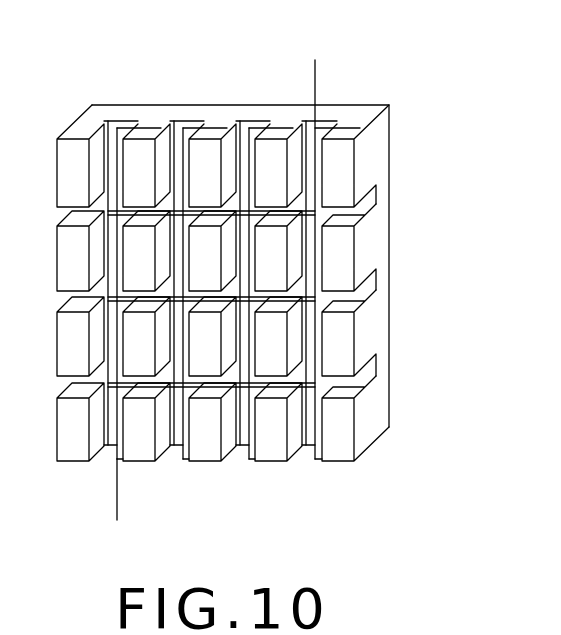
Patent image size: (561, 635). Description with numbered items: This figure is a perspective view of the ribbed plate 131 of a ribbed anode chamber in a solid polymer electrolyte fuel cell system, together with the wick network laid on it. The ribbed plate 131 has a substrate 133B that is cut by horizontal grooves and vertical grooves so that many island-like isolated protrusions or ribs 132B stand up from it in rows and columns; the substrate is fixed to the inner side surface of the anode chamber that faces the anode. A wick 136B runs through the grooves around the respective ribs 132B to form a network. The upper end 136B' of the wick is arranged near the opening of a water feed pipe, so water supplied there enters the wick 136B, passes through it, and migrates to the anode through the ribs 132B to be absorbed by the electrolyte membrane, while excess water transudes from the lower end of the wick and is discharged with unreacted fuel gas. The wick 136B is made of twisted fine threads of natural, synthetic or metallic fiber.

The ribbed plate 131 is at (278, 280).
The ribs 132B is at (276, 448).
The substrate 133B is at (378, 161).
The wick 136B is at (264, 257).
The upper end of the wick 136B' is at (306, 241).